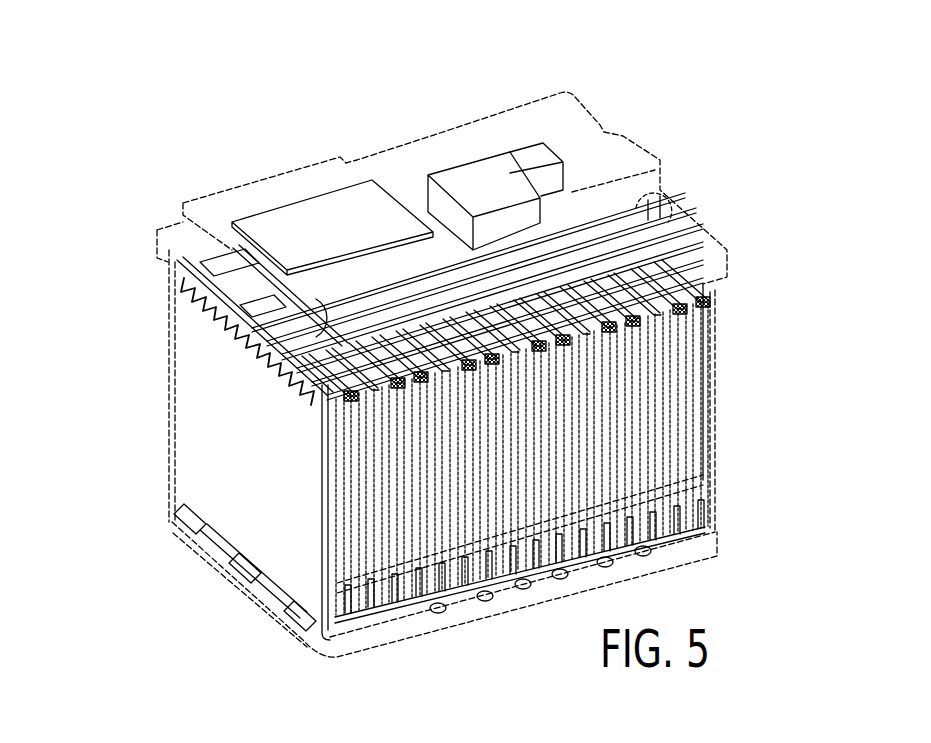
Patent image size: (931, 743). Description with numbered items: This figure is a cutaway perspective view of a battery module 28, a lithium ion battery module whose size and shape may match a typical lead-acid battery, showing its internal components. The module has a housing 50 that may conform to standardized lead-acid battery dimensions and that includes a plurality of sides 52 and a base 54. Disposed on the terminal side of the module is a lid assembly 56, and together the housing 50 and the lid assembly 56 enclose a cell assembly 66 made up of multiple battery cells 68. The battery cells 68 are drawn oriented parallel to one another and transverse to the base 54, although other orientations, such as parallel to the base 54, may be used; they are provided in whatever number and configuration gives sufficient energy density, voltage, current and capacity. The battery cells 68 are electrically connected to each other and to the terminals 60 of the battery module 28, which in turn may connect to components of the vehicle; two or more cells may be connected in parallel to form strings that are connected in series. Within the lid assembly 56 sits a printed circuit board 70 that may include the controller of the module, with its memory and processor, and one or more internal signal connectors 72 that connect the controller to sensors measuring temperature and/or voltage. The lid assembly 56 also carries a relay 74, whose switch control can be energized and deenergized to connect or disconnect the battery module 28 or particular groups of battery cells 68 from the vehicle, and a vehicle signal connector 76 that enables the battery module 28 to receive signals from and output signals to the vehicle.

The battery module 28 is at (705, 143).
The housing 50 is at (158, 405).
The sides 52 is at (207, 457).
The base 54 is at (420, 647).
The lid assembly 56 is at (240, 183).
The terminals 60 is at (652, 221).
The cell assembly 66 is at (728, 357).
The battery cells 68 is at (650, 520).
The printed circuit board 70 is at (310, 197).
The internal signal connectors 72 is at (417, 257).
The relay 74 is at (492, 230).
The vehicle signal connector 76 is at (560, 167).